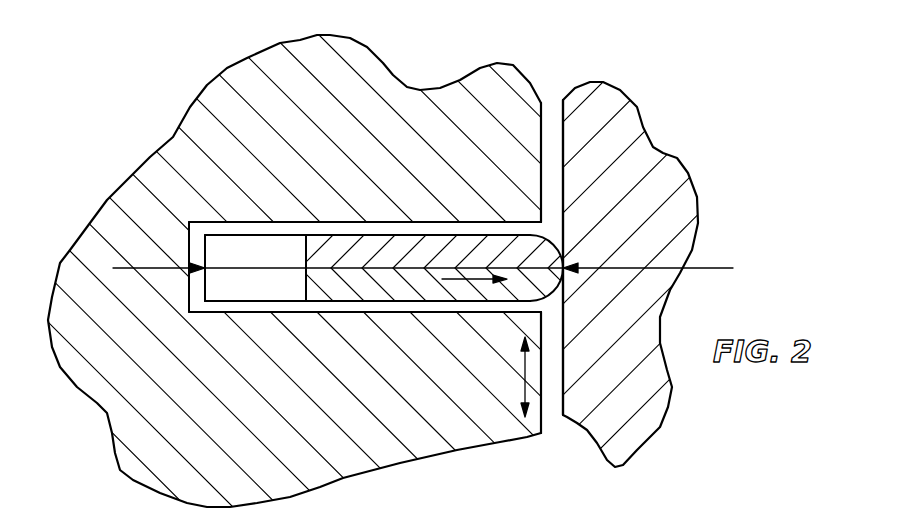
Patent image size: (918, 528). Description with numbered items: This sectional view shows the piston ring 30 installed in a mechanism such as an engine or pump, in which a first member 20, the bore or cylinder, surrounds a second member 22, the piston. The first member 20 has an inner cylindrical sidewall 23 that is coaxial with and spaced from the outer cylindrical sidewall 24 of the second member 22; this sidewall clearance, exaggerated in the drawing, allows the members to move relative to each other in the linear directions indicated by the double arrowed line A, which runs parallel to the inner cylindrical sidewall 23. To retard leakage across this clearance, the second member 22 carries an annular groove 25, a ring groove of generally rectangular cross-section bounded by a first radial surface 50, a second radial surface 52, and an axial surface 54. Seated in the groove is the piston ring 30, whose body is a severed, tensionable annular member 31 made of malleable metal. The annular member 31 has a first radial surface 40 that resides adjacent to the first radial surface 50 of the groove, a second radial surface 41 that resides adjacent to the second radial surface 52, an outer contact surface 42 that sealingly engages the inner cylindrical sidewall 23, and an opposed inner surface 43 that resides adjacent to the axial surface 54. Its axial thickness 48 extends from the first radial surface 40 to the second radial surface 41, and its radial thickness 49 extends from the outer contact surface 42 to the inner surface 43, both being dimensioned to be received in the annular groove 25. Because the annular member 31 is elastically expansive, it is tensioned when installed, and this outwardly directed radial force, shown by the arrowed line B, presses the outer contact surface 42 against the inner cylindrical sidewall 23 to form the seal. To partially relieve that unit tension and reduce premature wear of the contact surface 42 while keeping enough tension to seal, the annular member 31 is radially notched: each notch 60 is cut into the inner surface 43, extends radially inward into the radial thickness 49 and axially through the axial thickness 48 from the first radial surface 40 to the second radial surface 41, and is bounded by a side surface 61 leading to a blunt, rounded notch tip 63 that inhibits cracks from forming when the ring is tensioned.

The first member 20 is at (641, 98).
The second member 22 is at (398, 72).
The inner cylindrical sidewall 23 is at (557, 123).
The outer cylindrical sidewall 24 is at (547, 400).
The annular groove 25 is at (445, 228).
The piston ring 30 is at (272, 222).
The annular member 31 is at (347, 292).
The first radial surface 40 is at (325, 237).
The second radial surface 41 is at (418, 302).
The outer contact surface 42 is at (563, 262).
The inner surface 43 is at (204, 289).
The axial thickness 48 is at (378, 314).
The radial thickness 49 is at (147, 268).
The first radial surface of annular groove 50 is at (478, 225).
The second radial surface of annular groove 52 is at (460, 308).
The axial surface 54 is at (190, 240).
The notch 60 is at (253, 295).
The side surface 61 is at (245, 250).
The notch tip 63 is at (303, 257).
The double arrowed line A is at (517, 392).
The arrowed line B is at (485, 280).